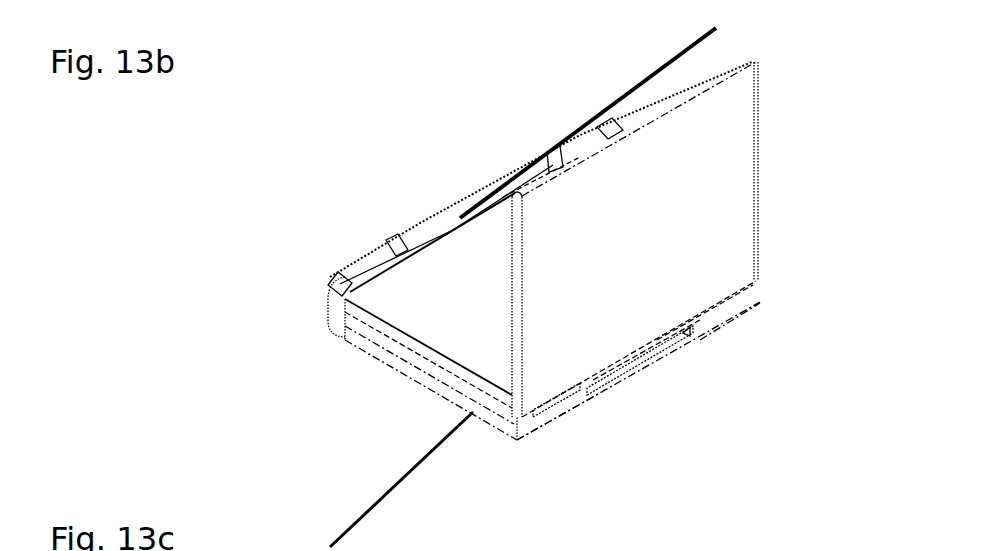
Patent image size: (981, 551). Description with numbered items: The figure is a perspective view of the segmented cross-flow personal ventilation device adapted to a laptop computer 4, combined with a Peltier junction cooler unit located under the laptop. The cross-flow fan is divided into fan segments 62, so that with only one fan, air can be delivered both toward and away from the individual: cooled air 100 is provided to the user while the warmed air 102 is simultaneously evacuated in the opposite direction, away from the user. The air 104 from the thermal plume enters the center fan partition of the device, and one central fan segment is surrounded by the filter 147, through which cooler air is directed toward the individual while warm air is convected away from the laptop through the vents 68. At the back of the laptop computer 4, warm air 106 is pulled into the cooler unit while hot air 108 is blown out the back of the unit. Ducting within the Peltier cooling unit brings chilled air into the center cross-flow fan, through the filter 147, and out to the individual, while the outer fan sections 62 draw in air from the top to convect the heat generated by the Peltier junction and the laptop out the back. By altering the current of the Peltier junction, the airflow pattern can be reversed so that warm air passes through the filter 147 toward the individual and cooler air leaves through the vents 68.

The laptop computer 4 is at (735, 213).
The fan segments 62 is at (607, 11).
The vents 68 is at (643, 365).
The cooled air 100 is at (531, 275).
The warmed air 102 is at (498, 148).
The air from the thermal plume 104 is at (326, 351).
The warm air 106 is at (748, 344).
The hot air 108 is at (557, 422).
The filter 147 is at (617, 109).